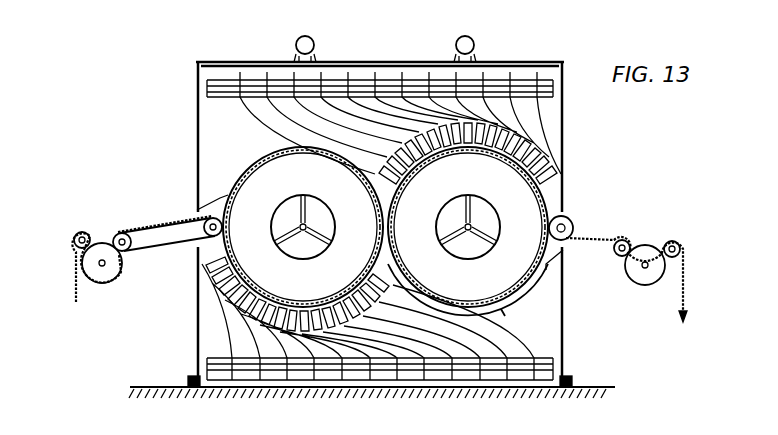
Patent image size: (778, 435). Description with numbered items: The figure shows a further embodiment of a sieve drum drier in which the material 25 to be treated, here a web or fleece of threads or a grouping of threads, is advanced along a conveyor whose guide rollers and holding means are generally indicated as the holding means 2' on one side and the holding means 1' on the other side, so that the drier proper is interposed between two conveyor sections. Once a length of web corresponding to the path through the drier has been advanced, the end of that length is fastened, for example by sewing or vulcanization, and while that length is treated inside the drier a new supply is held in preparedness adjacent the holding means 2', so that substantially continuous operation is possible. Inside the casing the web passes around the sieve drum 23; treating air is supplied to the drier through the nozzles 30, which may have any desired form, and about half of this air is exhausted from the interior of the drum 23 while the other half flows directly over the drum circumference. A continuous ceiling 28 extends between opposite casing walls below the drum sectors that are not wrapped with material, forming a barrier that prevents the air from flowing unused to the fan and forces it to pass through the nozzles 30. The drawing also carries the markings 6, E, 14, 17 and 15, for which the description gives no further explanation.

The drums 6 is at (508, 303).
The nozzles 30 is at (558, 183).
The continuous ceiling 28 is at (398, 300).
The drum 23 is at (487, 311).
The material to be treated 25 is at (137, 225).
The holding means 2' is at (98, 284).
The holding means 1' is at (616, 238).
The web delivery direction E is at (688, 326).
The web feed direction arrow 14 is at (500, 24).
The direction arrow 17 is at (135, 427).
The direction arrow 15 is at (305, 427).